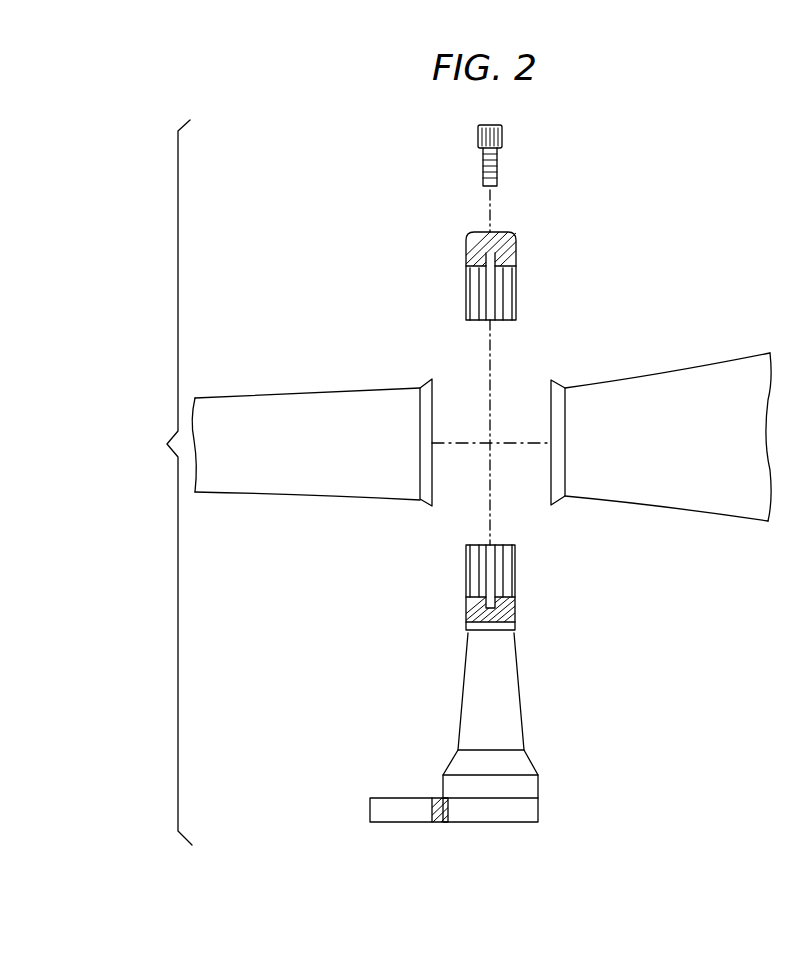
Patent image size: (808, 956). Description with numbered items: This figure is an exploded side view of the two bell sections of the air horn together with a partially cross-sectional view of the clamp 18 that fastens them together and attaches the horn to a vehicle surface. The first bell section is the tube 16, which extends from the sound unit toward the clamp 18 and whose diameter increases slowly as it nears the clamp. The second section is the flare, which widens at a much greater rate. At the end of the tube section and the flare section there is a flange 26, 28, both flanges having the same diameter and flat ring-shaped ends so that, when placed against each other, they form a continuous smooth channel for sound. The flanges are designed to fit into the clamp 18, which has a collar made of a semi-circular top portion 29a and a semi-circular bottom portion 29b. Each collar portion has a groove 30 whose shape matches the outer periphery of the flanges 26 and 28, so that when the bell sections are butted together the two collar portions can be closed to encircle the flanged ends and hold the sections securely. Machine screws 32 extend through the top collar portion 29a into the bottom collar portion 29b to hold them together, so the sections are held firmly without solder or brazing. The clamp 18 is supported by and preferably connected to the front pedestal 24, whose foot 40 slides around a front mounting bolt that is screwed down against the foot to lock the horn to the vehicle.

The tube 16 is at (313, 392).
The clamp 18 is at (753, 522).
The front pedestal 24 is at (520, 702).
The flange 26 is at (420, 503).
The flange 28 is at (562, 382).
The top portion of the collar 29a is at (518, 278).
The bottom portion of the collar 29b is at (466, 580).
The groove 30 is at (478, 268).
The machine screws 32 is at (500, 180).
The foot 40 is at (370, 810).